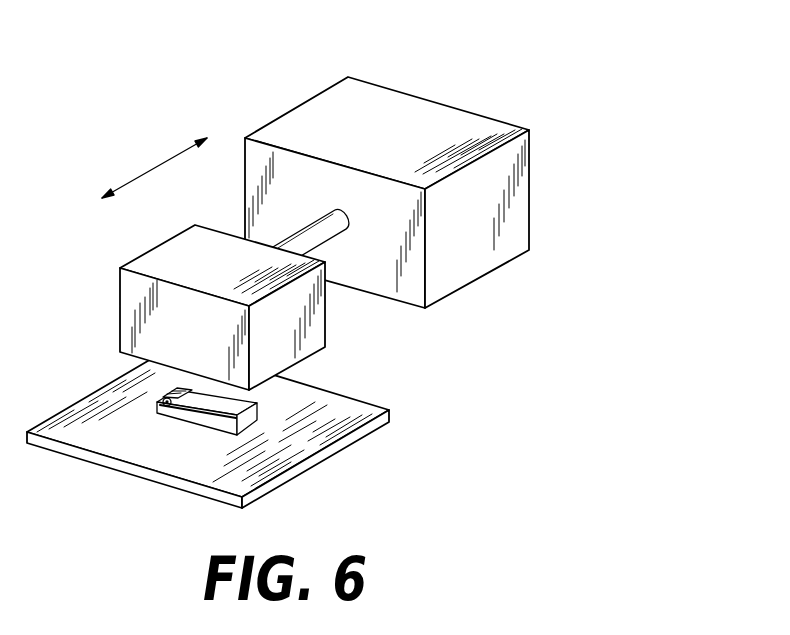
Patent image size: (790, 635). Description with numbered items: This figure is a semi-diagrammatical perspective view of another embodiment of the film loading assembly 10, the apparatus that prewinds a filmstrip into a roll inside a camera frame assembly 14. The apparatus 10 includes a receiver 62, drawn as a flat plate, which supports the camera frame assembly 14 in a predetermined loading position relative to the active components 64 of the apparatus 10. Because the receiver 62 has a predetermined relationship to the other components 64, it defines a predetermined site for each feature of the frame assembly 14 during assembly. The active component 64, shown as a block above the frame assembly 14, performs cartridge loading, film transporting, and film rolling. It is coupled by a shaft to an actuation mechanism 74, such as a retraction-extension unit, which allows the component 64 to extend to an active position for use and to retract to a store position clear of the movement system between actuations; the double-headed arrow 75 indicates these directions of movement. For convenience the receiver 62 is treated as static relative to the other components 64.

The film loading assembly 10 is at (334, 263).
The camera frame assembly 14 is at (250, 428).
The receiver 62 is at (355, 398).
The active components 64 is at (147, 254).
The actuation mechanism 74 is at (532, 195).
The double-headed arrow 75 is at (165, 160).